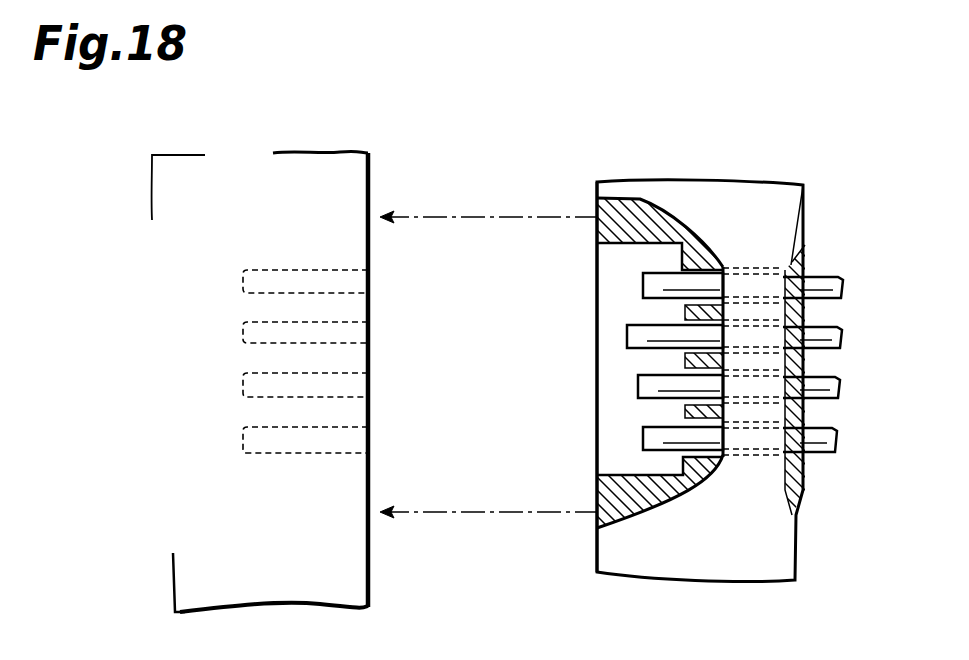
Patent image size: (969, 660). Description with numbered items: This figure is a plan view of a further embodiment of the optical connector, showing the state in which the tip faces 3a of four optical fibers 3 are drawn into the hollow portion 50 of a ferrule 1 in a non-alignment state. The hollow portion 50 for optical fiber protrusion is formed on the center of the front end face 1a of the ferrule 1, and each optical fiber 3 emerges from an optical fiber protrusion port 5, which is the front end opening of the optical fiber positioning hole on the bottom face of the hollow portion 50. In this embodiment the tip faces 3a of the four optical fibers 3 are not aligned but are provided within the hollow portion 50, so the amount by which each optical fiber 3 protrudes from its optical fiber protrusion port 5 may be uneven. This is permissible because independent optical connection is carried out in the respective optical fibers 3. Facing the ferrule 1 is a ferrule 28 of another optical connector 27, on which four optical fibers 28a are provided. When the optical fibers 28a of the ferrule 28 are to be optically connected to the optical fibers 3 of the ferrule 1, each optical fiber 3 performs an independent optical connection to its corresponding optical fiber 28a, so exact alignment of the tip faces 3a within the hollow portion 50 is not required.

The ferrule 1 is at (608, 355).
The front end face 1a is at (597, 547).
The optical fiber 3 is at (828, 273).
The tip face 3a is at (643, 280).
The optical fiber protrusion port 5 is at (684, 265).
The another optical connector 27 is at (255, 175).
The ferrule 28 is at (313, 148).
The optical fiber 28a is at (297, 345).
The hollow portion 50 is at (643, 463).